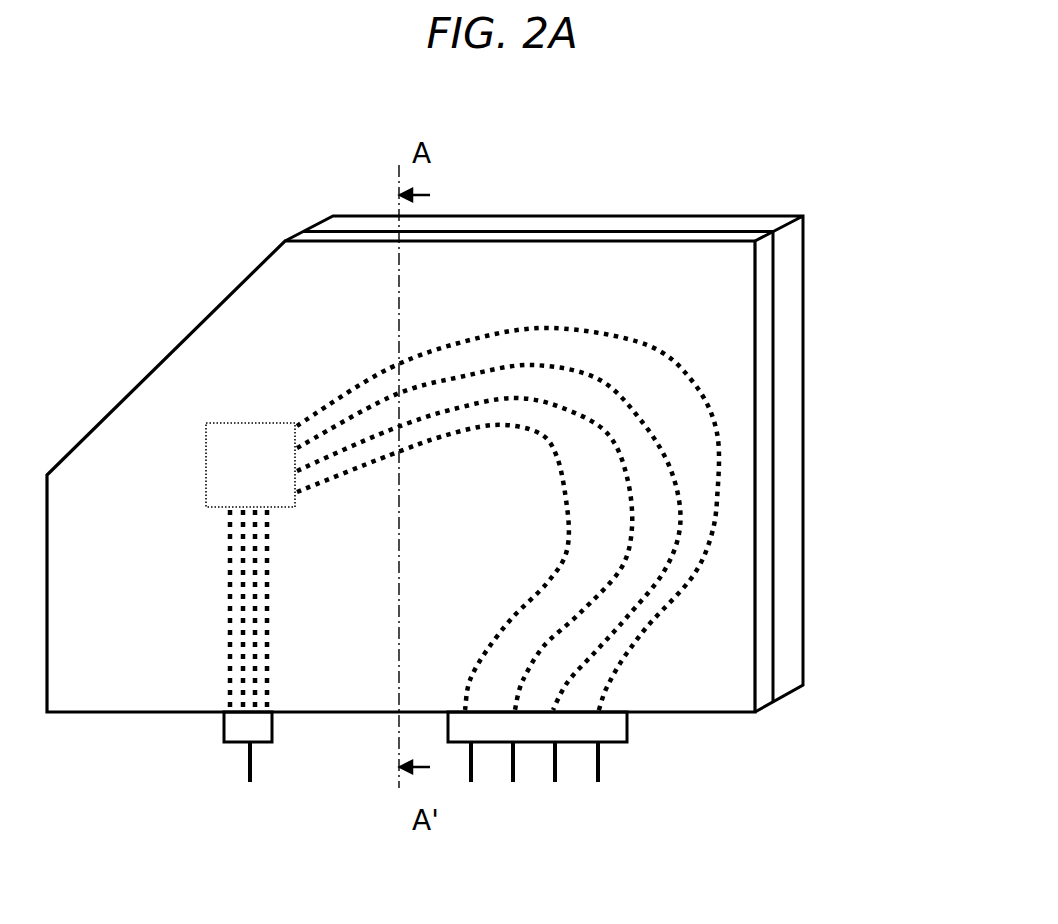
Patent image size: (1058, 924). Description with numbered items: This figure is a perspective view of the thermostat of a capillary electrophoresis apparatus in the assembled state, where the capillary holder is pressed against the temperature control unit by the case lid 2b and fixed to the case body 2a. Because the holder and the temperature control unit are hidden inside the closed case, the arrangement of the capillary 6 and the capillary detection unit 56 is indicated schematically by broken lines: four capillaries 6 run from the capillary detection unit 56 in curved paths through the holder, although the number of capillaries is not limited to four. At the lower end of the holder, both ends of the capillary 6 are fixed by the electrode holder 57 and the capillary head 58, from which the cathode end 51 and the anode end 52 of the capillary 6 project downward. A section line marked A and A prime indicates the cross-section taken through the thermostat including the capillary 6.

The case body 2a is at (805, 288).
The case lid 2b is at (775, 402).
The capillary 6 is at (580, 330).
The capillary detection unit 56 is at (240, 422).
The capillary head 58 is at (270, 745).
The anode end 52 is at (250, 780).
The electrode holder 57 is at (627, 743).
The cathode end 51 is at (598, 782).